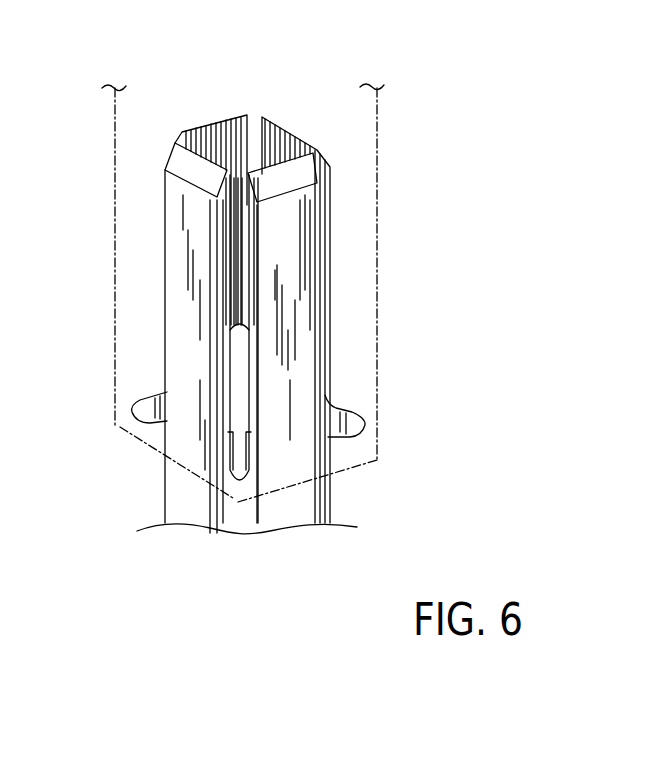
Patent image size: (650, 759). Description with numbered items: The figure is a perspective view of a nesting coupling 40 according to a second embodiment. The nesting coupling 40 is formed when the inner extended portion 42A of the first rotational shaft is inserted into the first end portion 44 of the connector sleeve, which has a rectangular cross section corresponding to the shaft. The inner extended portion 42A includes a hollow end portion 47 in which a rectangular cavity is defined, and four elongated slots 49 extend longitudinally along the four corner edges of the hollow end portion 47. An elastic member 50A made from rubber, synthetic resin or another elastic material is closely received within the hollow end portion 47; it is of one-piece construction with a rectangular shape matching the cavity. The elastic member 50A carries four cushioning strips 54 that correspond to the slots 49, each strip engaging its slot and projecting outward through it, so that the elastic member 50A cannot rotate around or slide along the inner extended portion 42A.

The nesting coupling 40 is at (107, 198).
The inner extended portion 42A is at (300, 275).
The first end portion 44 is at (372, 177).
The hollow end portion 47 is at (222, 147).
The elongated slots 49 is at (237, 265).
The elastic member 50A is at (237, 403).
The cushioning strips 54 is at (350, 425).